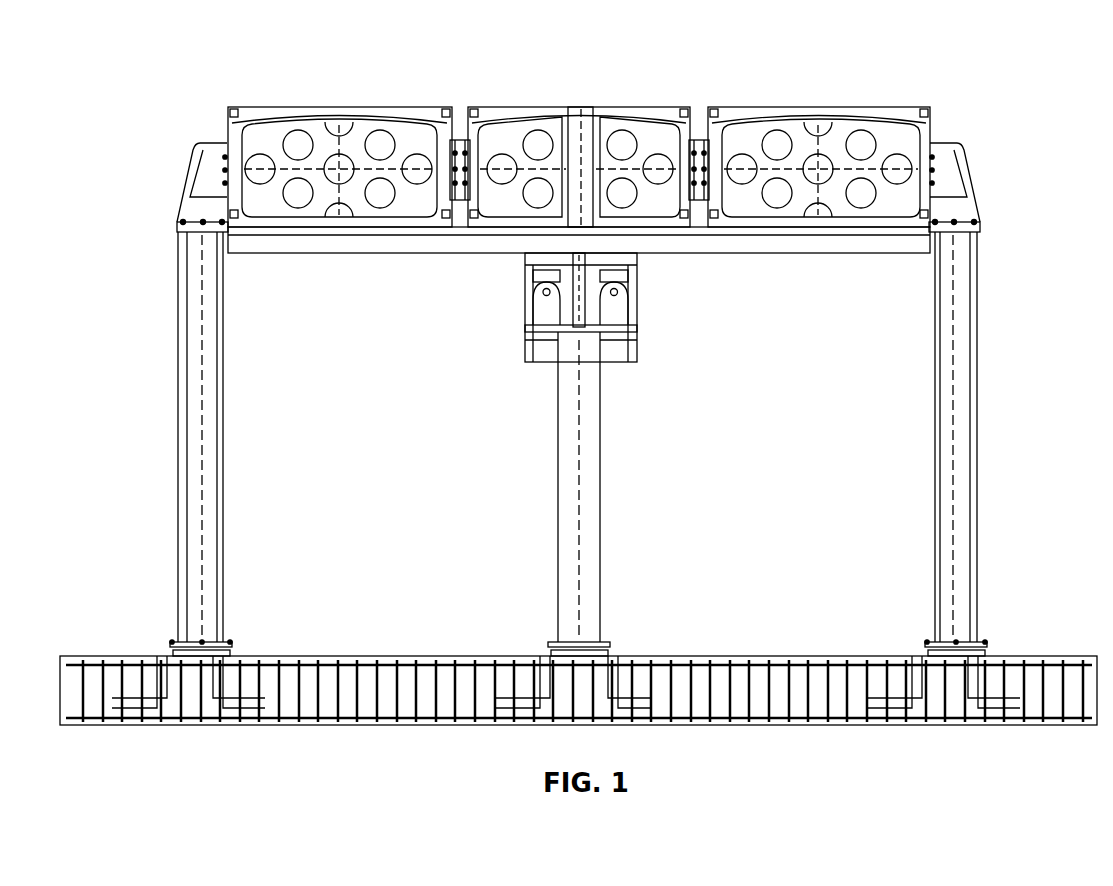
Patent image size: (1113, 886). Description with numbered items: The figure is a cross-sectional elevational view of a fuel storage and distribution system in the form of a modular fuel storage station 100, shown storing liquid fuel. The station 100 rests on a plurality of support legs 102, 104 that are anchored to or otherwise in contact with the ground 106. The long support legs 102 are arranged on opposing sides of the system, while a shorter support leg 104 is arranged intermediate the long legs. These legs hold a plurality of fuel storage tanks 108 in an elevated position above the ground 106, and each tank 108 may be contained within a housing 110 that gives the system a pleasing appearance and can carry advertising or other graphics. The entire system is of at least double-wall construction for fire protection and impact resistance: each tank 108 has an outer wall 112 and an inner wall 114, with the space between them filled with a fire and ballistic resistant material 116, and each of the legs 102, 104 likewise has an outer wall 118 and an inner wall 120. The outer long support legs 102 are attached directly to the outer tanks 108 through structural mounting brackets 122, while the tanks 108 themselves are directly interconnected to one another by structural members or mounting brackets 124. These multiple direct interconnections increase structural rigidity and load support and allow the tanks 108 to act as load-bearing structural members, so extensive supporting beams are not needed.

The modular fuel storage station 100 is at (578, 379).
The long support legs 102 is at (588, 470).
The shorter support leg 104 is at (592, 460).
The ground 106 is at (815, 656).
The fuel storage tank 108 is at (396, 114).
The housing 110 is at (300, 107).
The outer wall 112 is at (290, 228).
The inner wall 114 is at (365, 114).
The fire and ballistic resistant material 116 is at (330, 218).
The outer wall 118 is at (225, 443).
The inner wall 120 is at (214, 492).
The structural mounting brackets 122 is at (207, 182).
The mounting brackets 124 is at (463, 150).